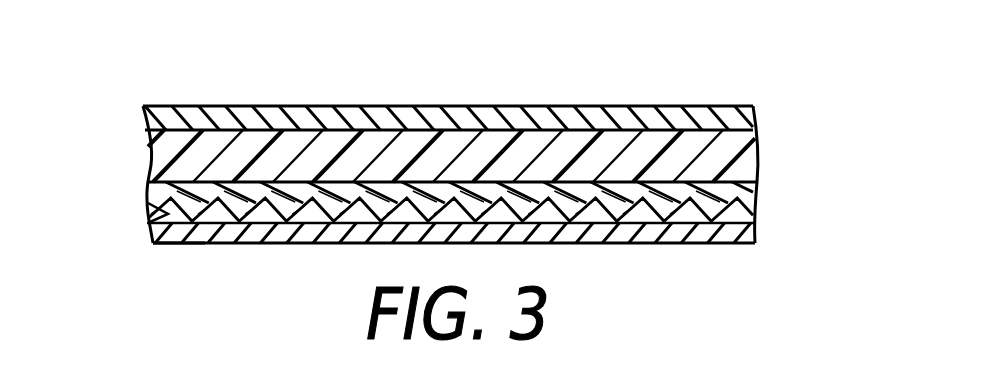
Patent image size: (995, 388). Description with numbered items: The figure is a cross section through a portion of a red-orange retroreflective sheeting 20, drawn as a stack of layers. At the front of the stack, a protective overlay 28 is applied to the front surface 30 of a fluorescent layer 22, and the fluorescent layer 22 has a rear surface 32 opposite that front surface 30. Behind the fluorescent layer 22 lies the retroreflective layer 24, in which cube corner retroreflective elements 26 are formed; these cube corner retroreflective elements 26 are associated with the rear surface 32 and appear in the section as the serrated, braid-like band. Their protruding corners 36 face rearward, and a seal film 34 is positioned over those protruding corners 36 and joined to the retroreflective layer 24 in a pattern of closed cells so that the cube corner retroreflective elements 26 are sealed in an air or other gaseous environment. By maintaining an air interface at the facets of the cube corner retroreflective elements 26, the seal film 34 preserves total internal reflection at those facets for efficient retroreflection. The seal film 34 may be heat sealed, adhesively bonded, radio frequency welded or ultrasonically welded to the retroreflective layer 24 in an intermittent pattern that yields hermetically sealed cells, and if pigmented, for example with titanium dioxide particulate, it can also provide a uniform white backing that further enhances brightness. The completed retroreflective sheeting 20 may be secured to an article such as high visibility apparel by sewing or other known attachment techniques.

The retroreflective sheeting 20 is at (766, 80).
The fluorescent layer 22 is at (758, 153).
The retroreflective layer 24 is at (757, 200).
The cube corner retroreflective elements 26 is at (148, 212).
The protective overlay 28 is at (165, 118).
The front surface 30 is at (228, 117).
The rear surface 32 is at (148, 193).
The seal film 34 is at (757, 228).
The protruding corners 36 is at (162, 240).